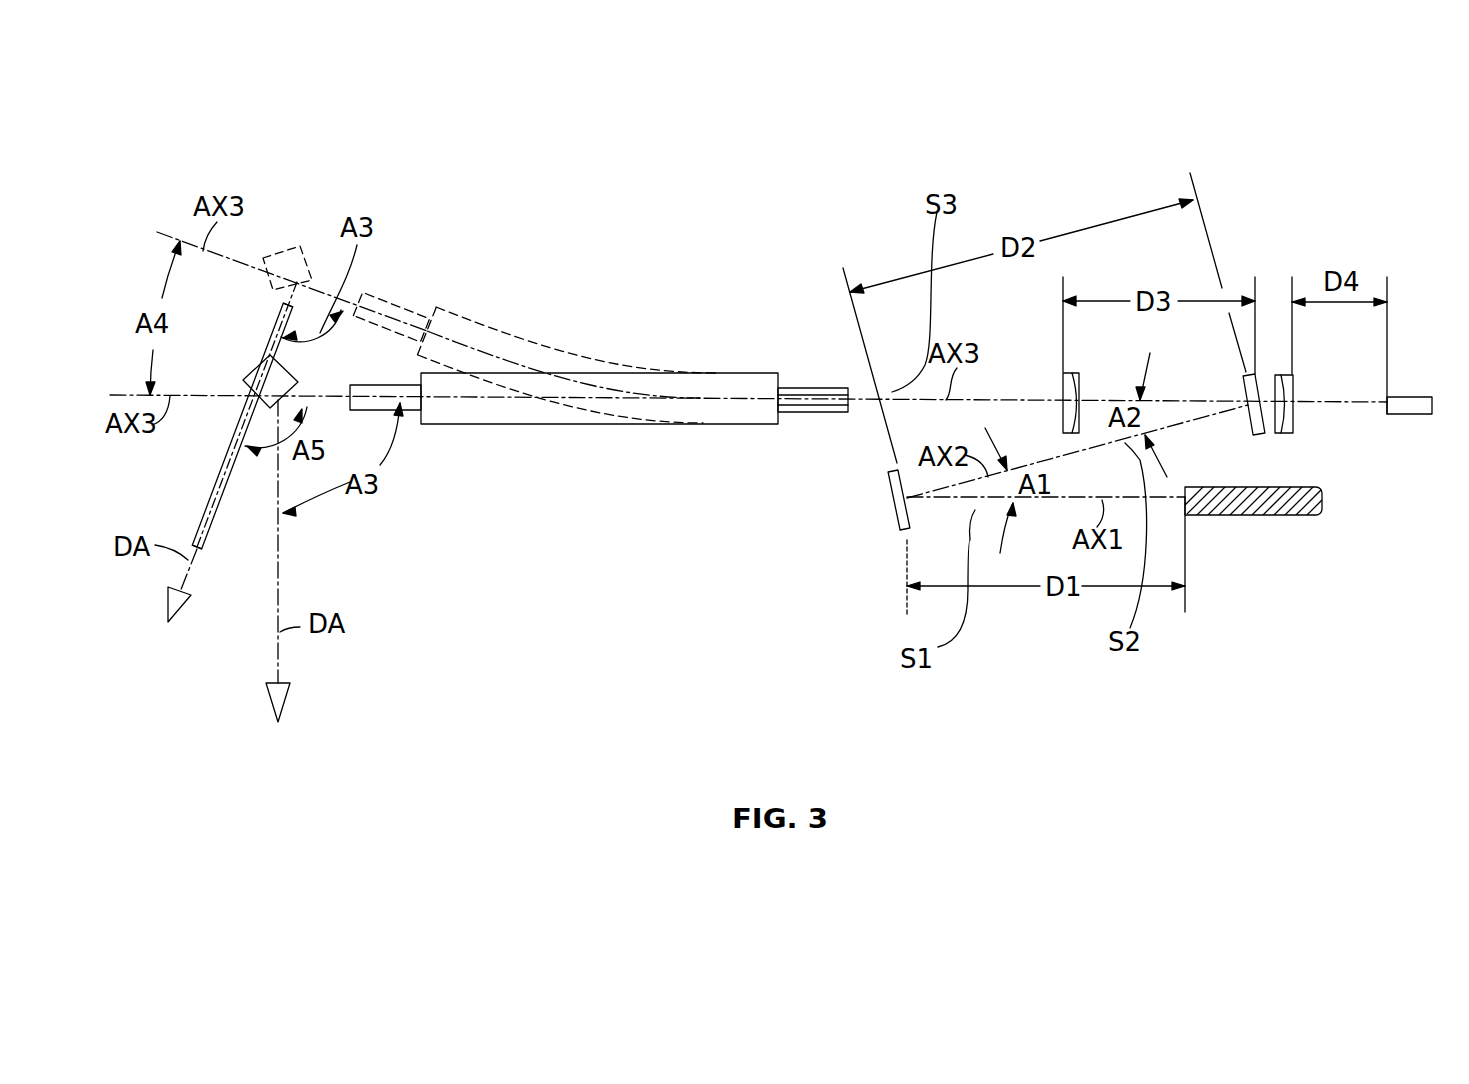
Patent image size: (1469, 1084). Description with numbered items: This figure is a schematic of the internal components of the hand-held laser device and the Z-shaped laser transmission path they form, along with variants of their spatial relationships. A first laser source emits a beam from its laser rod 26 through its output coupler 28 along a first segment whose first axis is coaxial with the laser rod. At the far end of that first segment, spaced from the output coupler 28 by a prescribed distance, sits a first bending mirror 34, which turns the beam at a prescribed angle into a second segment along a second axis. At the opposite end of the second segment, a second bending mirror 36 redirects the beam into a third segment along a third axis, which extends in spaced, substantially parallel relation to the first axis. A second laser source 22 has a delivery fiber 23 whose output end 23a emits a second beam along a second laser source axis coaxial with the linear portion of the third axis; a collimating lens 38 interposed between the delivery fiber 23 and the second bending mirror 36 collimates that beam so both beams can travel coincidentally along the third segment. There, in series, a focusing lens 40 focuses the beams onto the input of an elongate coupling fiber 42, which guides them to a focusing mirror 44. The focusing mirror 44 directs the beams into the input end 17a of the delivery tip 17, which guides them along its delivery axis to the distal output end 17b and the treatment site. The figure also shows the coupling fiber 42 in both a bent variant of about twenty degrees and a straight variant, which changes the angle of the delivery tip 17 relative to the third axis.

The delivery tip 17 is at (207, 500).
The input end of delivery tip 17a is at (322, 290).
The distal output end of delivery tip 17b is at (197, 549).
The second laser source 22 is at (1417, 389).
The delivery fiber 23 is at (1413, 427).
The output end of delivery fiber 23a is at (1382, 404).
The laser rod 26 is at (1265, 515).
The output coupler 28 is at (1187, 535).
The first bending mirror 34 is at (893, 513).
The second bending mirror 36 is at (1252, 424).
The collimating lens 38 is at (1293, 424).
The focusing lens 40 is at (1080, 380).
The coupling fiber 42 is at (382, 384).
The focusing mirror 44 is at (253, 370).